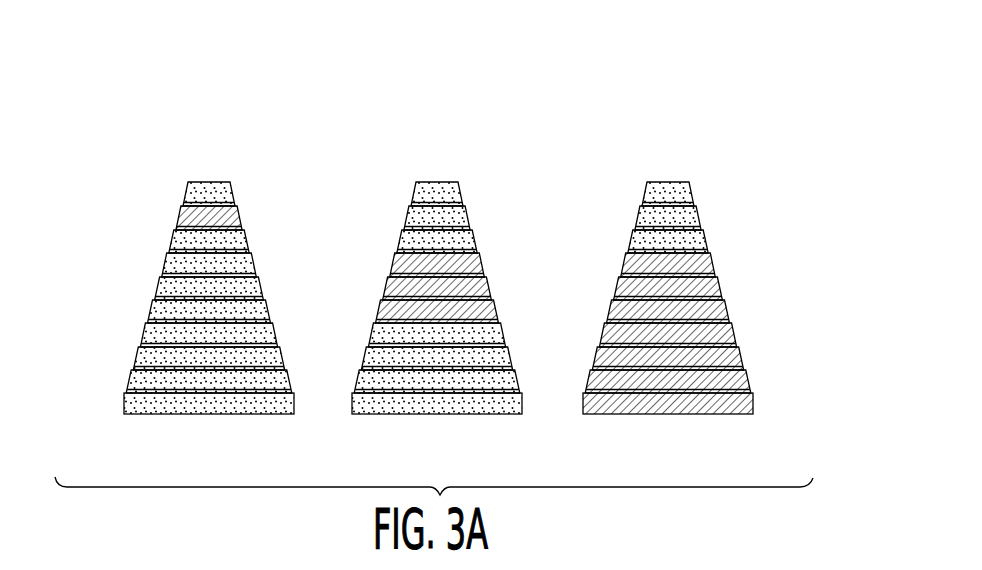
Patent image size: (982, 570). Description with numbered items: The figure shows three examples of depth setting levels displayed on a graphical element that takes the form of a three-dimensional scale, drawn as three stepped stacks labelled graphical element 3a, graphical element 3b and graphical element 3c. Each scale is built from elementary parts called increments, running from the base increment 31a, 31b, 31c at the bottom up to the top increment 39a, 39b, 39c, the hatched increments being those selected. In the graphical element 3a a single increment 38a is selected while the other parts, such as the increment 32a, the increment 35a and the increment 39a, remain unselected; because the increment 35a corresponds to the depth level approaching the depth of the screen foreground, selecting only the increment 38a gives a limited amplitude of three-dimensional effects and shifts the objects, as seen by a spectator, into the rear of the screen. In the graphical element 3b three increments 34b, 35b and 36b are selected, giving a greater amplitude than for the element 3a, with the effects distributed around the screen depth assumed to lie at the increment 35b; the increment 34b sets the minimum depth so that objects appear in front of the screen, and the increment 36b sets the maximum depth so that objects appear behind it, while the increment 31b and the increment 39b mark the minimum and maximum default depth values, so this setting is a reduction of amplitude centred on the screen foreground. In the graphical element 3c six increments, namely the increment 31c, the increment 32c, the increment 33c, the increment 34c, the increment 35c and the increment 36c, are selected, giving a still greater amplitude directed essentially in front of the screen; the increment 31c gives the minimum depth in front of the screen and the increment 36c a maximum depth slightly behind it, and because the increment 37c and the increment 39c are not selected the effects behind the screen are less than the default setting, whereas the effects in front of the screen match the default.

The graphical element 3a is at (218, 168).
The graphical element 3b is at (443, 168).
The graphical element 3c is at (674, 168).
The increment 31a is at (207, 415).
The increment 31b is at (446, 415).
The increment 31c is at (688, 414).
The increment 32a is at (145, 358).
The increment 32c is at (602, 365).
The increment 33c is at (608, 327).
The increment 34b is at (380, 307).
The increment 34c is at (725, 308).
The increment 35a is at (168, 283).
The increment 35b is at (390, 285).
The increment 35c is at (715, 282).
The increment 36b is at (397, 260).
The increment 36c is at (707, 263).
The increment 37c is at (633, 238).
The increment 38a is at (185, 211).
The increment 39a is at (197, 184).
The increment 39b is at (457, 188).
The increment 39c is at (690, 193).